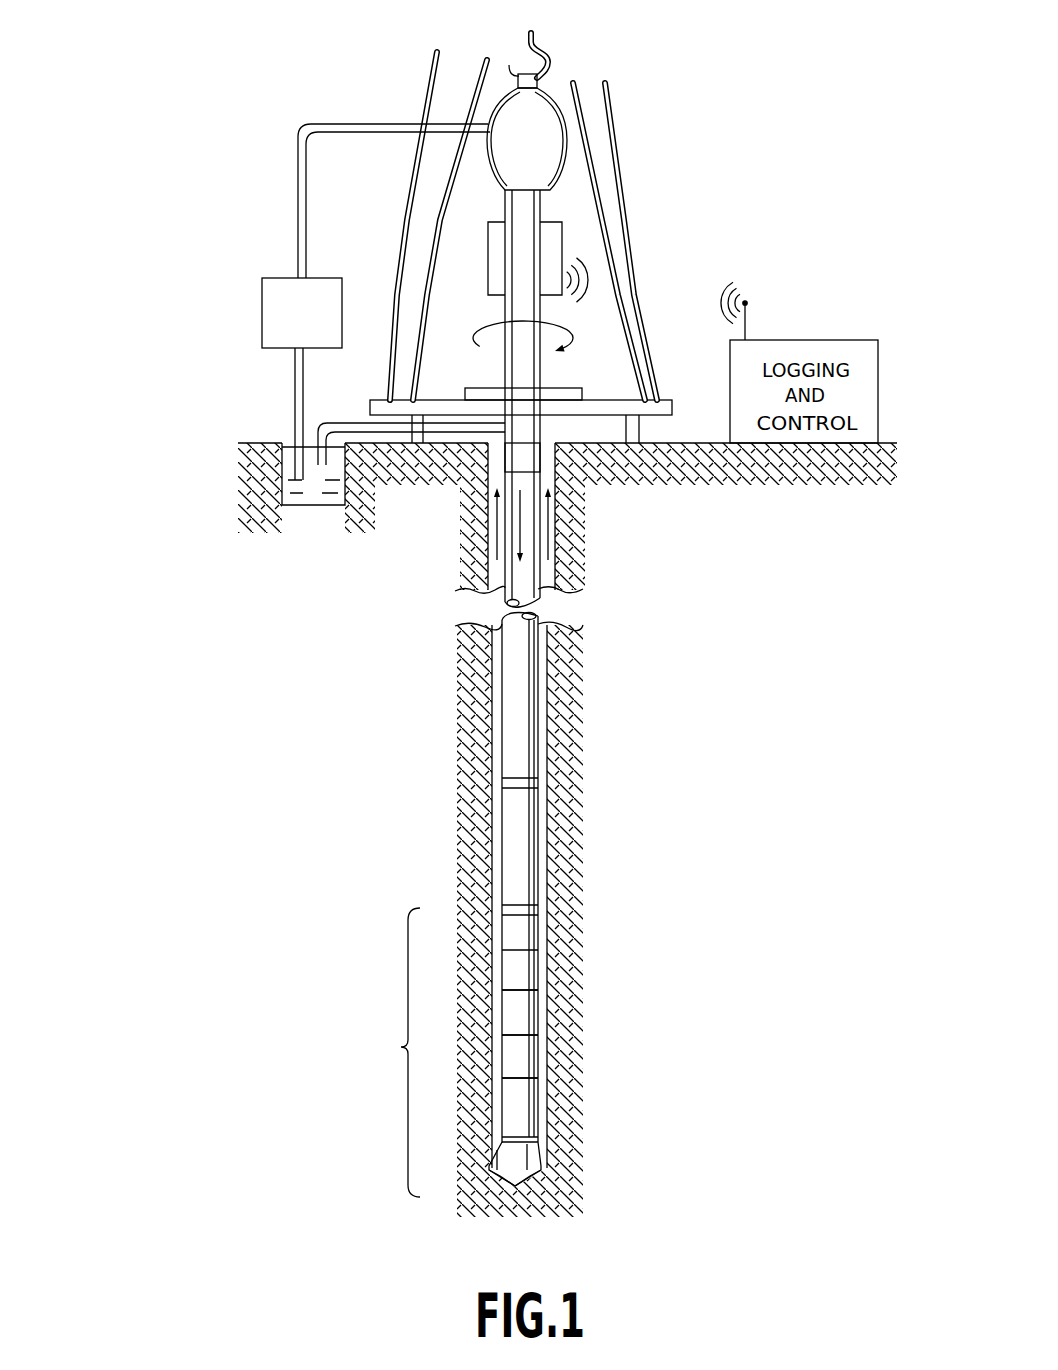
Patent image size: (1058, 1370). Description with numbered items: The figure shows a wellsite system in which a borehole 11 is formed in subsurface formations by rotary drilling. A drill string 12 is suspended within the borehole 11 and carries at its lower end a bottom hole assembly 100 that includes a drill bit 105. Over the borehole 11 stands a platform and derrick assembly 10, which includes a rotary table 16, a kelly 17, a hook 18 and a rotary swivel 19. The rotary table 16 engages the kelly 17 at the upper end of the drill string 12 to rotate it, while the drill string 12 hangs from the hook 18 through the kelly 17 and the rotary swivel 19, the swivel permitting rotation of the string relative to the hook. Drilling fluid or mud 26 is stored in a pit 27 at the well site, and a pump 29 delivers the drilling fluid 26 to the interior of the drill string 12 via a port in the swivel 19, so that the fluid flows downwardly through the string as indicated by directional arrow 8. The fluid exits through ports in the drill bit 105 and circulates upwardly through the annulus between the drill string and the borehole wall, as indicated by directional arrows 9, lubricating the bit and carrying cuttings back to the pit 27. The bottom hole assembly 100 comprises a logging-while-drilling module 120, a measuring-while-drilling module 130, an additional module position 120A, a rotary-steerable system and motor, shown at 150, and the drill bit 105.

The platform and derrick assembly 10 is at (655, 125).
The hook 18 is at (525, 37).
The rotary swivel 19 is at (513, 174).
The kelly 17 is at (518, 373).
The rotary table 16 is at (563, 392).
The borehole 11 is at (556, 444).
The drill string 12 is at (518, 440).
The pump 29 is at (277, 352).
The pit 27 is at (284, 437).
The drilling fluid 26 is at (316, 500).
The directional arrows 9 is at (497, 521).
The directional arrow 8 is at (520, 527).
The bottom hole assembly 100 is at (400, 1047).
The logging-while-drilling module 120 is at (523, 971).
The measuring-while-drilling module 130 is at (522, 1017).
The additional LWD/MWD module 120A is at (522, 1060).
The steering unit 150 is at (522, 1103).
The drill bit 105 is at (518, 1156).